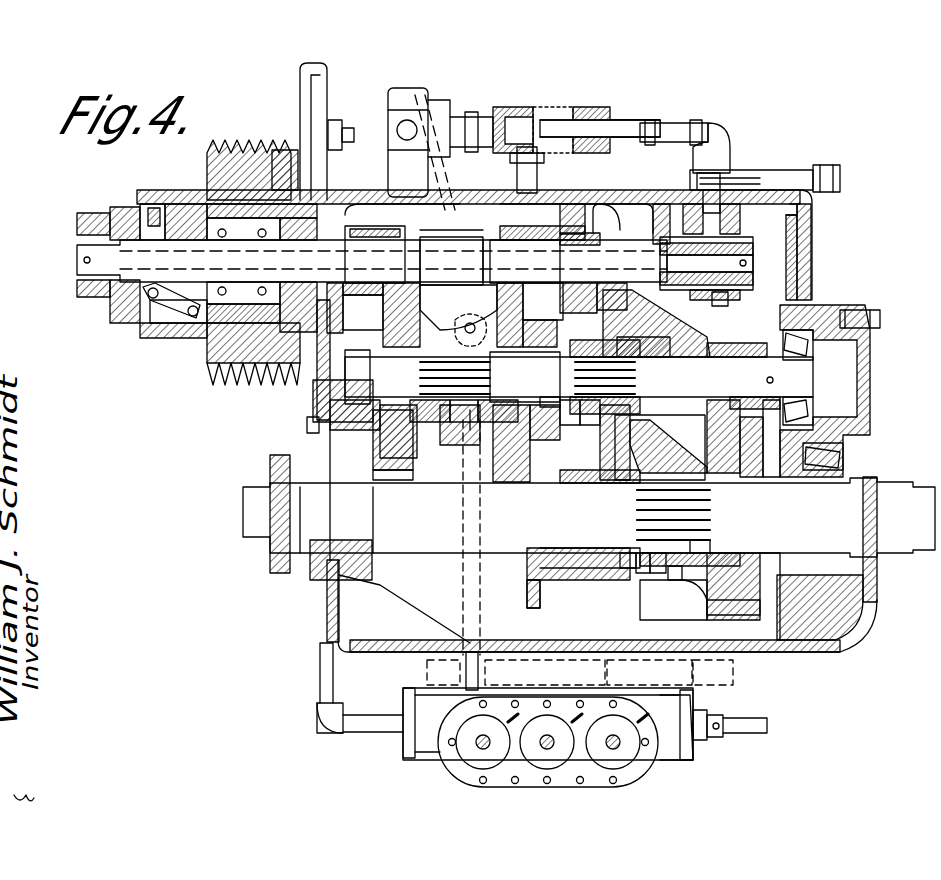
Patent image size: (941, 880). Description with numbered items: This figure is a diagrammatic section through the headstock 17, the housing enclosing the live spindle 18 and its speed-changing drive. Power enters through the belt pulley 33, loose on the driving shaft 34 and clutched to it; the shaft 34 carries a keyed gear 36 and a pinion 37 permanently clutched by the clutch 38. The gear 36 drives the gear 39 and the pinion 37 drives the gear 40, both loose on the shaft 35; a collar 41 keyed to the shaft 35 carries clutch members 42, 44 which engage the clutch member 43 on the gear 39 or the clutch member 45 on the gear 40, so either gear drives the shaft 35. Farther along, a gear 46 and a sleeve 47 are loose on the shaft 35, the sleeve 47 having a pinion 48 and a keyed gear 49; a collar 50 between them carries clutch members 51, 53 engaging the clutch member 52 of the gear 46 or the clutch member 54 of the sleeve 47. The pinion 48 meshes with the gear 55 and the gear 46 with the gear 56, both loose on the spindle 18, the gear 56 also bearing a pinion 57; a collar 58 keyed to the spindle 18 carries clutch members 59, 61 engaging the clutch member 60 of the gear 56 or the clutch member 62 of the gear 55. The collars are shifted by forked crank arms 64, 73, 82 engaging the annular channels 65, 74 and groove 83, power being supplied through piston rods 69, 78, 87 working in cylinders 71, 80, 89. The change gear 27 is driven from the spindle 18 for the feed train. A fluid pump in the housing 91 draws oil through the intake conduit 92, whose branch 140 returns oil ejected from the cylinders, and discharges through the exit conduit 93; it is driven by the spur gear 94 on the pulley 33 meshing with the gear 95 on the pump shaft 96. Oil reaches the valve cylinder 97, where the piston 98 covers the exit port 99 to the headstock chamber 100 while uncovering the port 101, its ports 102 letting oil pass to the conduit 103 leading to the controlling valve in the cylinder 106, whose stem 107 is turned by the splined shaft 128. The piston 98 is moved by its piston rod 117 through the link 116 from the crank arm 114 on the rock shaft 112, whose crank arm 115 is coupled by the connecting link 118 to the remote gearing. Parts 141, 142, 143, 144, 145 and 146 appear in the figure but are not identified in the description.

The headstock 17 is at (622, 195).
The live spindle 18 is at (897, 482).
The change gear 27 is at (268, 568).
The belt pulley 33 is at (234, 138).
The driving shaft 34 is at (98, 285).
The shaft 35 is at (808, 376).
The gear 36 is at (388, 220).
The pinion 37 is at (505, 228).
The clutch 38 is at (482, 236).
The gear 39 is at (398, 308).
The gear 40 is at (462, 308).
The collar 41 is at (460, 420).
The clutch member 42 is at (422, 420).
The clutch member 43 is at (420, 445).
The clutch member 44 is at (482, 440).
The clutch member 45 is at (486, 382).
The gear 46 is at (548, 322).
The sleeve 47 is at (692, 345).
The pinion 48 is at (740, 346).
The gear 49 is at (650, 446).
The collar 50 is at (592, 422).
The clutch member 51 is at (574, 420).
The clutch member 52 is at (520, 386).
The clutch member 53 is at (626, 478).
The clutch member 54 is at (640, 390).
The gear 55 is at (720, 612).
The gear 56 is at (540, 608).
The pinion 57 is at (600, 565).
The collar 58 is at (660, 570).
The clutch member 59 is at (644, 565).
The clutch member 60 is at (634, 562).
The clutch member 61 is at (735, 556).
The clutch member 62 is at (705, 545).
The forked crank arm 64 is at (465, 440).
The annular channel 65 is at (452, 322).
The piston rod 69 is at (478, 748).
The cylinder 71 is at (455, 757).
The forked crank 73 is at (600, 470).
The annular channel 74 is at (549, 404).
The piston rod 78 is at (545, 750).
The cylinder 80 is at (525, 758).
The forked crank arm 82 is at (680, 608).
The annular groove 83 is at (676, 576).
The piston rod 87 is at (612, 750).
The cylinder 89 is at (626, 775).
The pump housing 91 is at (397, 90).
The intake conduit 92 is at (437, 190).
The exit conduit 93 is at (436, 122).
The spur gear 94 is at (288, 150).
The gear 95 is at (330, 72).
The shaft 96 is at (336, 130).
The valve cylinder 97 is at (515, 112).
The piston 98 is at (535, 115).
The exit port 99 is at (540, 152).
The chamber 100 is at (800, 212).
The port 101 is at (592, 118).
The ports 102 is at (565, 113).
The conduit 103 is at (357, 735).
The valve cylinder 106 is at (668, 762).
The valve stem 107 is at (712, 742).
The rock shaft 112 is at (722, 212).
The crank arm 114 is at (724, 136).
The crank arm 115 is at (802, 165).
The link 116 is at (682, 122).
The piston rod 117 is at (644, 124).
The connecting link 118 is at (842, 181).
The splined shaft 128 is at (757, 737).
The branch conduit 140 is at (478, 672).
The sleeve 141 is at (760, 262).
The lever 142 is at (148, 325).
The plate 143 is at (790, 285).
The bearing 144 is at (595, 232).
The bearing 145 is at (752, 278).
The key 146 is at (732, 303).